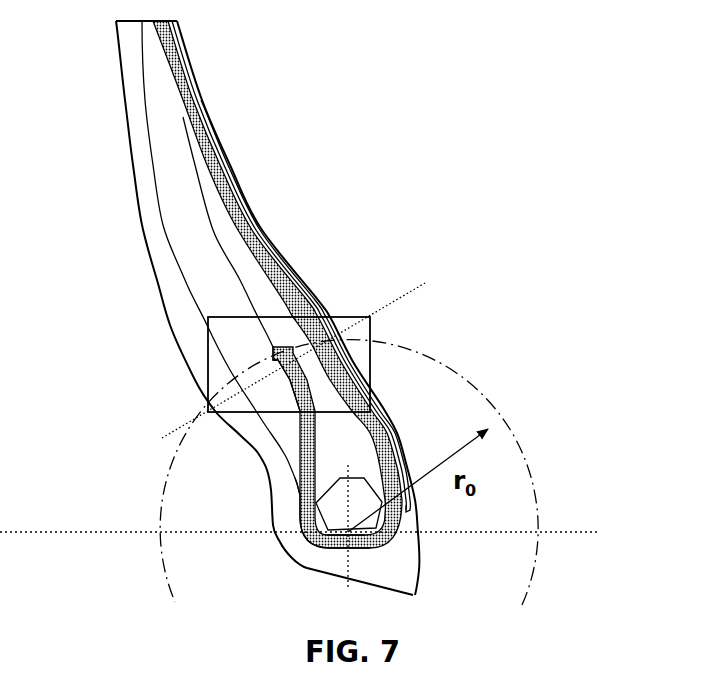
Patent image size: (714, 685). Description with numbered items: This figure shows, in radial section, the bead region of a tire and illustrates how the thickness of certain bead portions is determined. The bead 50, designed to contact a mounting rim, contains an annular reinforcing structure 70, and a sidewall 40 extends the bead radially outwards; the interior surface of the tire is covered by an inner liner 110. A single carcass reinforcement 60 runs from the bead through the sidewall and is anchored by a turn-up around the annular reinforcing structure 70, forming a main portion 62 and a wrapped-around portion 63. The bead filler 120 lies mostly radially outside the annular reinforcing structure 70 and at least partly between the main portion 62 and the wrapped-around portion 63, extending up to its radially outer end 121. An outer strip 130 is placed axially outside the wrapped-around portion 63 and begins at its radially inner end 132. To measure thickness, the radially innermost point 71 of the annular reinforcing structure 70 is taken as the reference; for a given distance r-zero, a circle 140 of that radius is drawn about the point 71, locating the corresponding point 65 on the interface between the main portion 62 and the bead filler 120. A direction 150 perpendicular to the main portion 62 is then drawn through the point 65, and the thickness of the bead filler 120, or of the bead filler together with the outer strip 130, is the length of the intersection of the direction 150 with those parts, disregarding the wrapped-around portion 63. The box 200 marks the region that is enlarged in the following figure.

The sidewall 40 is at (137, 163).
The bead 50 is at (280, 500).
The carcass reinforcement 60 is at (174, 51).
The main portion 62 is at (385, 427).
The wrapped-around portion 63 is at (300, 427).
The point of the interface 65 is at (317, 335).
The annular reinforcing structure 70 is at (347, 500).
The radially innermost point 71 is at (348, 548).
The inner liner 110 is at (247, 205).
The bead filler 120 is at (366, 468).
The radially outer end of the bead filler 121 is at (195, 116).
The outer strip 130 is at (180, 205).
The radially inner end of the outer strip 132 is at (288, 478).
The circle 140 is at (524, 458).
The direction 150 is at (393, 300).
The box 200 is at (372, 335).